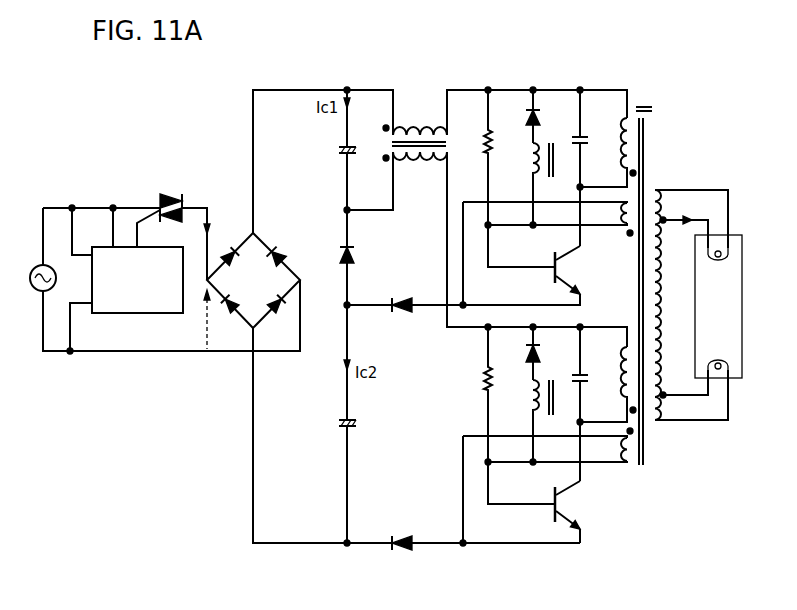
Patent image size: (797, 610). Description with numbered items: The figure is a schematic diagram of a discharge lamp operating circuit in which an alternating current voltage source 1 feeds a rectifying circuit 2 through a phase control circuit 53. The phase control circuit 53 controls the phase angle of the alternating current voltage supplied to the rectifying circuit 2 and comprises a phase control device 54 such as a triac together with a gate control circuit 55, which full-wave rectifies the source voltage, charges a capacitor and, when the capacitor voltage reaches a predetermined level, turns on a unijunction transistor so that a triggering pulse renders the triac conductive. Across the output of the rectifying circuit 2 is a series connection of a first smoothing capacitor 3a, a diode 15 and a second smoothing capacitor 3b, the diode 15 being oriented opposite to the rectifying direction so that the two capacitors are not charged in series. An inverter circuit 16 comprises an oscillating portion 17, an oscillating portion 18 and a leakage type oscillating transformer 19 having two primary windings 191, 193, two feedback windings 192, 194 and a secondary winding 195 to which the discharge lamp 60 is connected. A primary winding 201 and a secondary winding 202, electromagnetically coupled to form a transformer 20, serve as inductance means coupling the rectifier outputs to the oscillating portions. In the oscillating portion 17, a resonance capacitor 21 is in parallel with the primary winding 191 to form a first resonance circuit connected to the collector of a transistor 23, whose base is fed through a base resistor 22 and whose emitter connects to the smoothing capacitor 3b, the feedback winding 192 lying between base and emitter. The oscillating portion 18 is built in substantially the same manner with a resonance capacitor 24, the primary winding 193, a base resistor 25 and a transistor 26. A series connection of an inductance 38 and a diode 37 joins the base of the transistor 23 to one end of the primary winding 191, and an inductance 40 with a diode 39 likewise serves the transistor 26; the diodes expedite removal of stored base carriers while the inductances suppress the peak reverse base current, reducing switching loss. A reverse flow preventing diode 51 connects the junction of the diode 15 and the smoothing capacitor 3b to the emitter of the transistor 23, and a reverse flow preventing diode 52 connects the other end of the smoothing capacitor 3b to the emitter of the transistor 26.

The alternating current voltage source 1 is at (41, 265).
The rectifying circuit 2 is at (268, 238).
The first smoothing capacitor 3a is at (351, 146).
The second smoothing capacitor 3b is at (354, 420).
The diode 15 is at (356, 252).
The inverter circuit 16 is at (656, 65).
The oscillating portion 17 is at (588, 70).
The oscillating portion 18 is at (602, 553).
The oscillating transformer 19 is at (651, 106).
The primary winding 191 is at (618, 146).
The feedback winding 192 is at (621, 235).
The primary winding 193 is at (618, 382).
The feedback winding 194 is at (625, 468).
The secondary winding 195 is at (663, 287).
The transformer 20 is at (450, 142).
The primary winding 201 is at (416, 124).
The secondary winding 202 is at (414, 166).
The resonance capacitor 21 is at (592, 133).
The base resistor 22 is at (493, 140).
The transistor 23 is at (552, 277).
The resonance capacitor 24 is at (587, 372).
The base resistor 25 is at (492, 379).
The transistor 26 is at (568, 502).
The diode 37 is at (541, 118).
The inductance 38 is at (530, 165).
The diode 39 is at (541, 352).
The inductance 40 is at (527, 404).
The reverse flow preventing diode 51 is at (403, 295).
The reverse flow preventing diode 52 is at (402, 532).
The phase control circuit 53 is at (131, 193).
The phase control device 54 is at (162, 197).
The gate control circuit 55 is at (146, 315).
The discharge lamp 60 is at (739, 313).